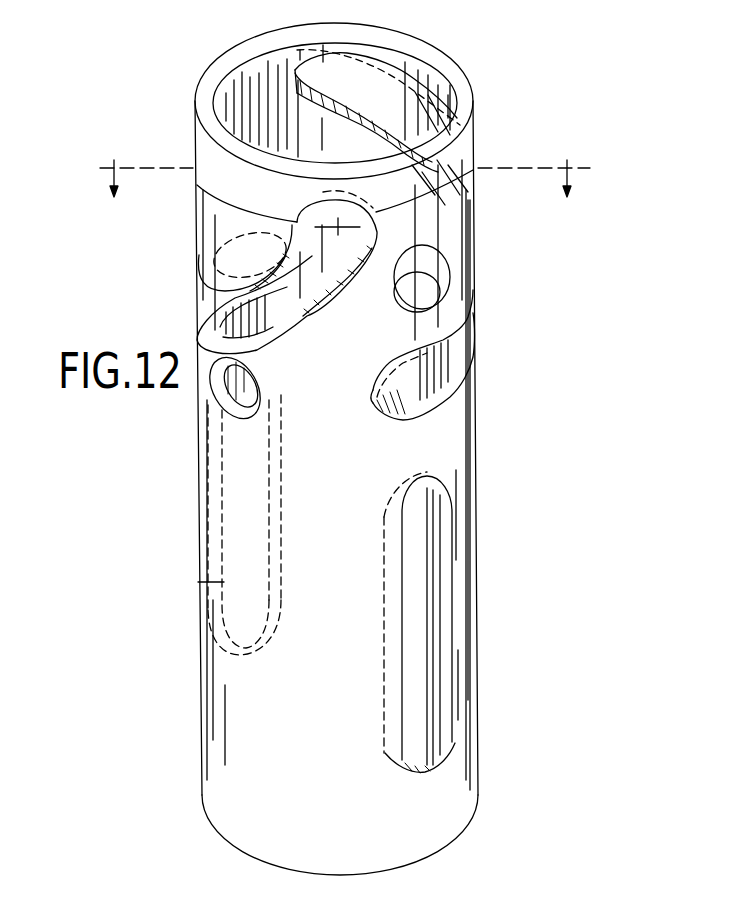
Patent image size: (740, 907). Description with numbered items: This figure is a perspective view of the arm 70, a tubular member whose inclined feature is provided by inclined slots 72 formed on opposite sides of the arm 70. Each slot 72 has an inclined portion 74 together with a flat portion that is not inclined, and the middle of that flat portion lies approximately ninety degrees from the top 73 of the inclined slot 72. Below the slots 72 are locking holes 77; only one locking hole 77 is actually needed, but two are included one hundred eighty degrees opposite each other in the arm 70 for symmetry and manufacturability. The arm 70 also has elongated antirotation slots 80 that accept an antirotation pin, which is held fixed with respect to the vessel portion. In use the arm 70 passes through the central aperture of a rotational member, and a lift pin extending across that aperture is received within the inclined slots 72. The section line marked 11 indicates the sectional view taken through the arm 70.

The section line 11- 11 is at (580, 203).
The arm 70 is at (470, 442).
The inclined slot 72 is at (277, 343).
The top of the inclined slot 73 is at (321, 201).
The inclined portion 74 is at (327, 316).
The locking hole 77 is at (247, 357).
The antirotation slot 80 is at (453, 583).